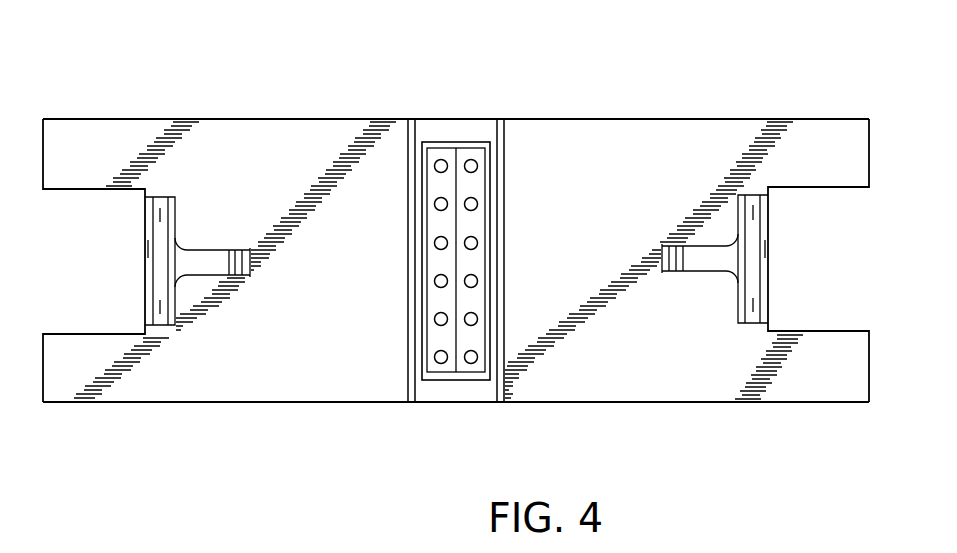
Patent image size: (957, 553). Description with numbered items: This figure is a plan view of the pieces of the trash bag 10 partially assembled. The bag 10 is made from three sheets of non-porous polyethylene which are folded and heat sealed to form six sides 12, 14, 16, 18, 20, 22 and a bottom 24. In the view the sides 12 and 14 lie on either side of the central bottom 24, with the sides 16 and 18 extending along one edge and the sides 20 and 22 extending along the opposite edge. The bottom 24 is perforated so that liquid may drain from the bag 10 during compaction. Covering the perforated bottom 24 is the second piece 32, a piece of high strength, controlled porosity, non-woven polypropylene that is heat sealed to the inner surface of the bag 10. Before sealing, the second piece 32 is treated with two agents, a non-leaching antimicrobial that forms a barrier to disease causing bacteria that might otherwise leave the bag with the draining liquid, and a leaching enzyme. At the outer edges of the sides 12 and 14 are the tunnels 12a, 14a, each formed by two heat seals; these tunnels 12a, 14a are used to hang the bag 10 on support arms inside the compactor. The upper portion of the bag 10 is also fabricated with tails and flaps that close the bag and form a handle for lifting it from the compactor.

The trash bag 10 is at (193, 459).
The side 12 is at (298, 193).
The tunnel 12a is at (153, 275).
The side 14 is at (646, 193).
The tunnel 14a is at (755, 266).
The side 16 is at (258, 118).
The side 18 is at (697, 118).
The side 20 is at (258, 403).
The side 22 is at (700, 403).
The bottom 24 is at (448, 127).
The second piece 32 is at (477, 368).